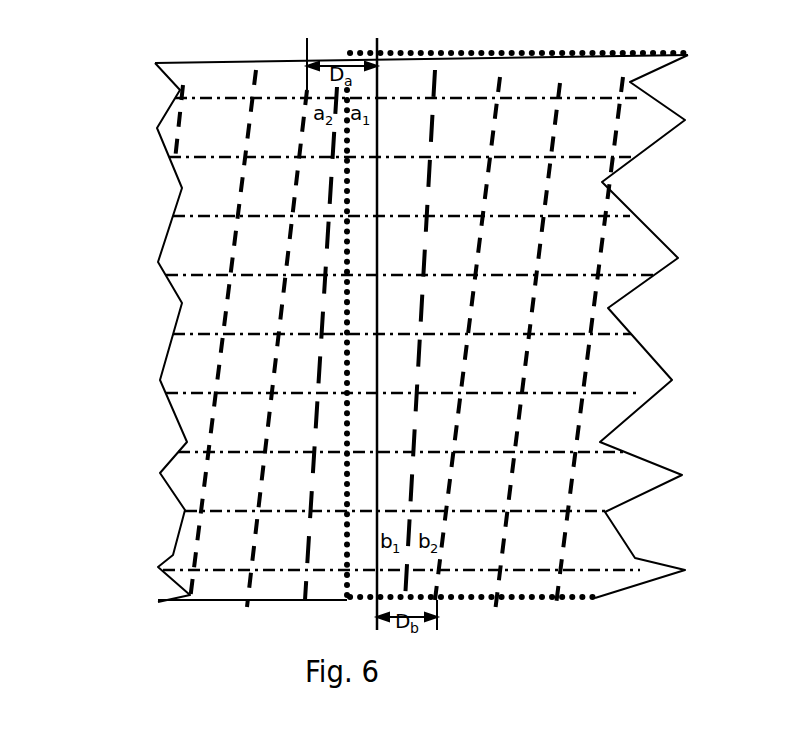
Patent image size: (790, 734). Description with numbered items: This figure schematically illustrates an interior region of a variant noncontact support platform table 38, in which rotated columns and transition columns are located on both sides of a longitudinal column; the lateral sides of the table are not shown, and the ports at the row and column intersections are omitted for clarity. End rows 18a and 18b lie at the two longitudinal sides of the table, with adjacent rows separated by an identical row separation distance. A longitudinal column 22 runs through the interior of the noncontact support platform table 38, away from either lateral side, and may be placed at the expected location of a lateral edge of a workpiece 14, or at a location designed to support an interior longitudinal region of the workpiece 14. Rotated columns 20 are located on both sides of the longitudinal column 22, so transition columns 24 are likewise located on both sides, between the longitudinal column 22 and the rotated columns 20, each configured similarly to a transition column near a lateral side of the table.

The workpiece 14 is at (478, 53).
The end row 18a is at (213, 98).
The end row 18b is at (210, 570).
The rotated columns 20 is at (280, 178).
The longitudinal column 22 is at (378, 248).
The transition columns 24 is at (318, 373).
The noncontact support platform table 38 is at (167, 463).